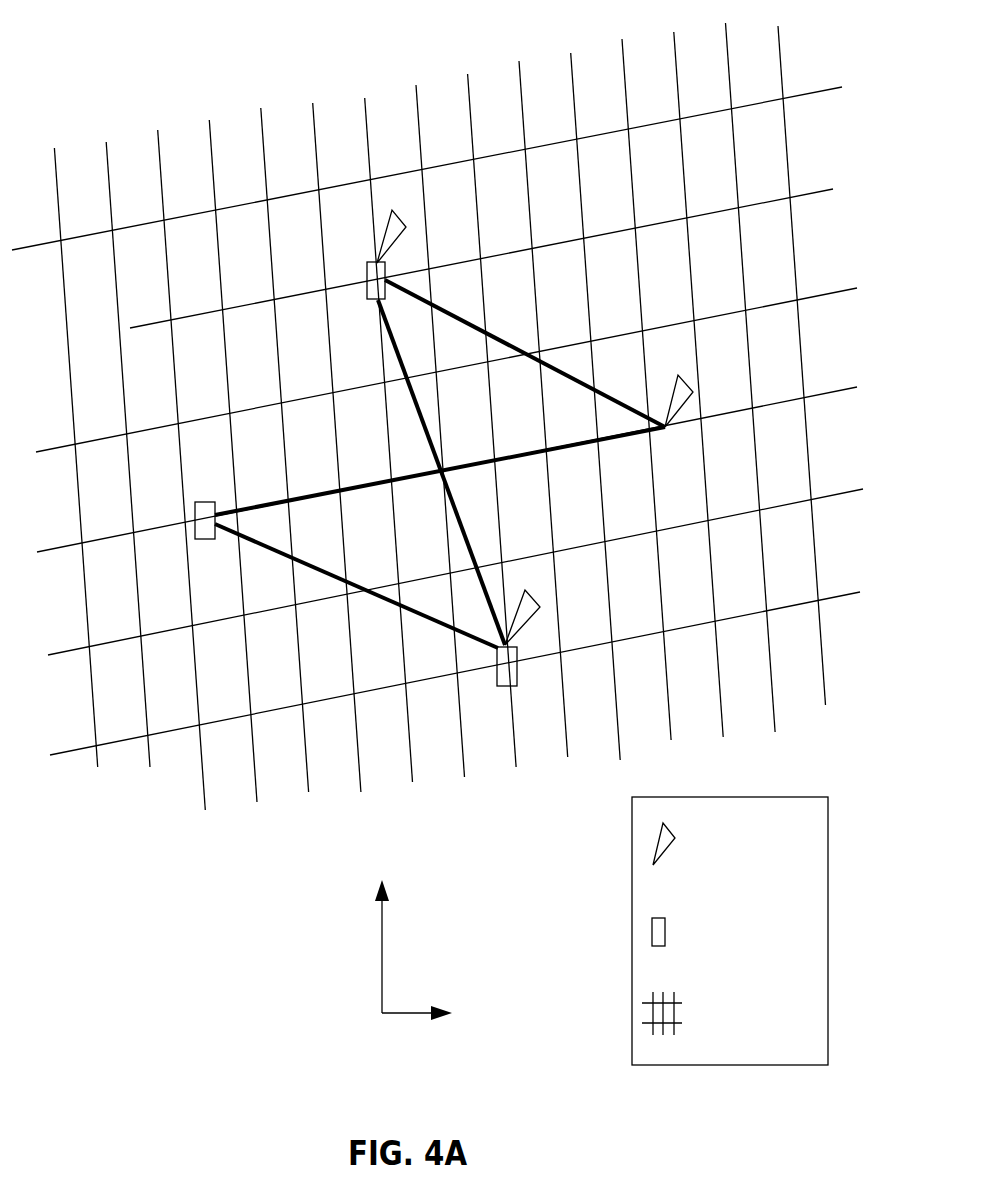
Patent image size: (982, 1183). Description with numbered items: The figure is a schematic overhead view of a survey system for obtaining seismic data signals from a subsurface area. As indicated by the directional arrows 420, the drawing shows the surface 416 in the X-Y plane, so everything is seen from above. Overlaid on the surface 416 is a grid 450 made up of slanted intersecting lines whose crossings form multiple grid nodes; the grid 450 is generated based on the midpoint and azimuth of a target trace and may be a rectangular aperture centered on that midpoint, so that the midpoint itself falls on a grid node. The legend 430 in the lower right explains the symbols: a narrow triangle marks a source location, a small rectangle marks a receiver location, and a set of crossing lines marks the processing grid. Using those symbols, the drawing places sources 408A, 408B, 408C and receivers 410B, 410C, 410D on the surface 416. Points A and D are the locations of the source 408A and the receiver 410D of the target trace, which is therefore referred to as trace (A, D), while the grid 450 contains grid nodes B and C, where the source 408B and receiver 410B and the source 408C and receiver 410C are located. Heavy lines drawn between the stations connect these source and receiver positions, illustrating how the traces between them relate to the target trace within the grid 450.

The surface 416 is at (270, 38).
The grid 450 is at (156, 146).
The receiver 410B is at (366, 267).
The source 408B is at (387, 257).
The source 408A is at (687, 382).
The receiver 410D is at (200, 501).
The source 408C is at (517, 630).
The receiver 410C is at (543, 689).
The directional arrows 420 is at (381, 943).
The legend 430 is at (632, 908).